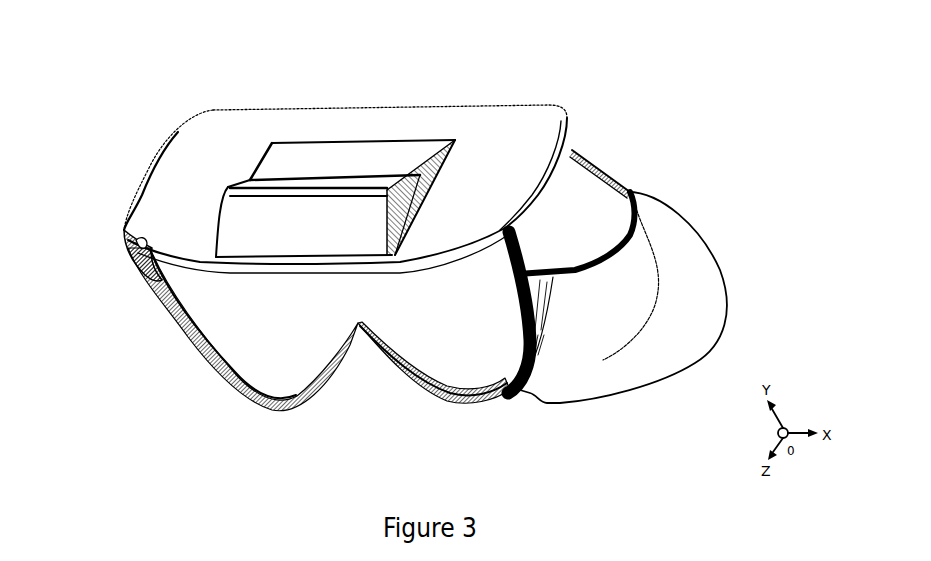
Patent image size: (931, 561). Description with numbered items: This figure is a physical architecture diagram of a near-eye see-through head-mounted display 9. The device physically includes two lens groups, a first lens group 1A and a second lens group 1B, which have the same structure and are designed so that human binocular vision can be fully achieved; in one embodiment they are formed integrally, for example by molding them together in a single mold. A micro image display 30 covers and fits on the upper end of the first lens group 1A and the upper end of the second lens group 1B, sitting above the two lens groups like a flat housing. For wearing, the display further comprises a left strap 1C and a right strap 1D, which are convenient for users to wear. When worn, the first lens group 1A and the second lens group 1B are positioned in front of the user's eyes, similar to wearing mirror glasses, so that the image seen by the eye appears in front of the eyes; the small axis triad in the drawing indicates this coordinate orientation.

The head-mounted display device 9 is at (115, 56).
The front frame / housing 30 is at (488, 147).
The left eye cup 1A is at (233, 338).
The right eye cup 1B is at (463, 363).
The left hinge portion 1C is at (142, 247).
The right strap bracket 1D is at (573, 373).